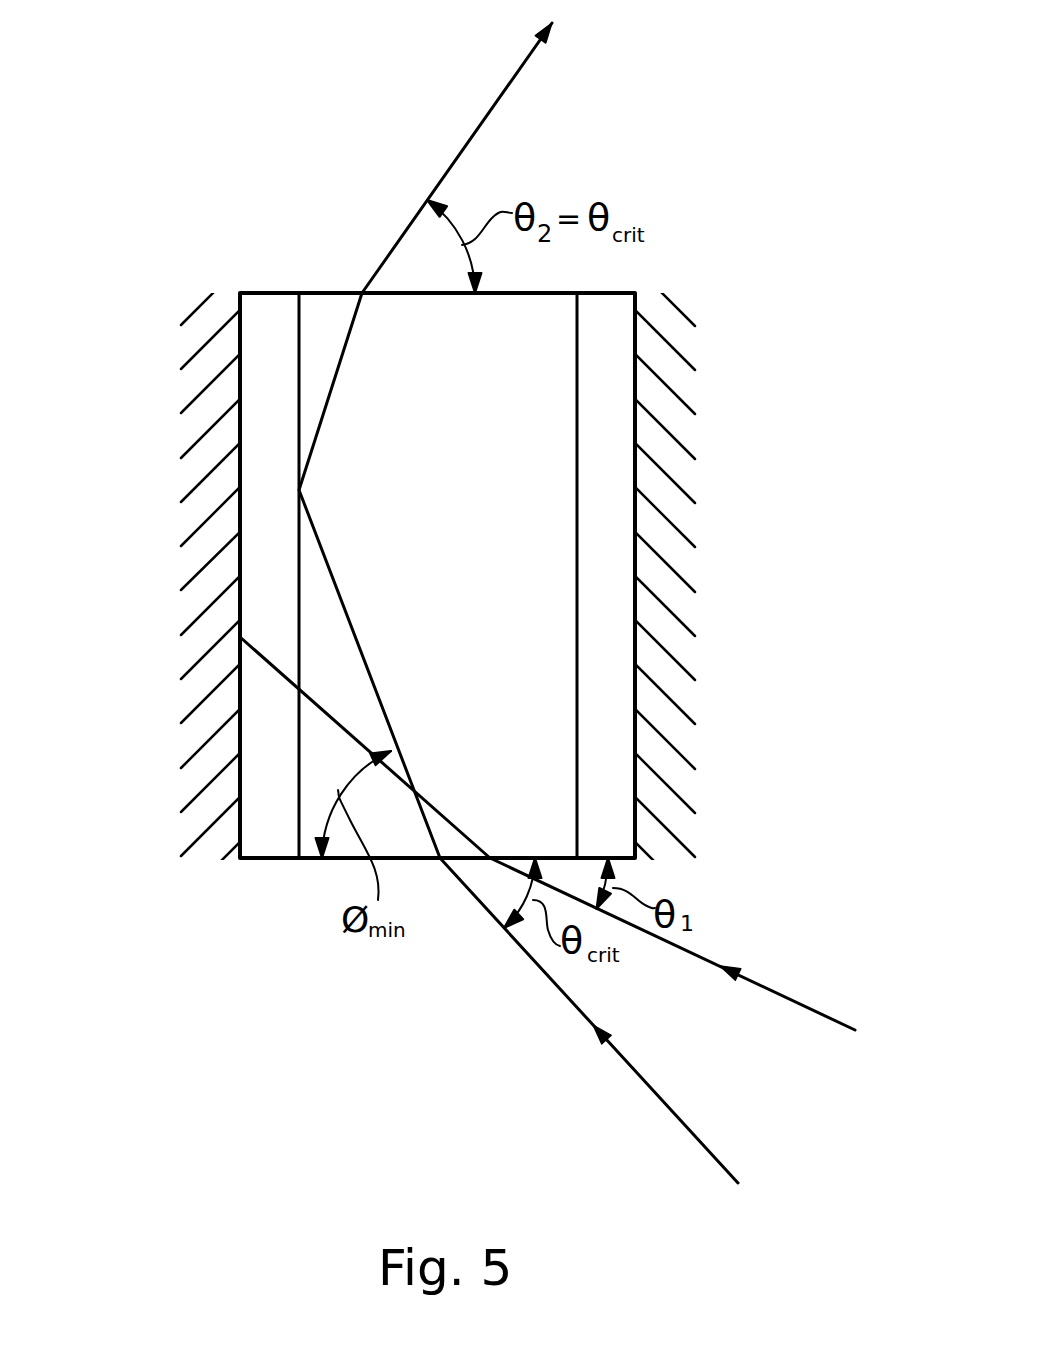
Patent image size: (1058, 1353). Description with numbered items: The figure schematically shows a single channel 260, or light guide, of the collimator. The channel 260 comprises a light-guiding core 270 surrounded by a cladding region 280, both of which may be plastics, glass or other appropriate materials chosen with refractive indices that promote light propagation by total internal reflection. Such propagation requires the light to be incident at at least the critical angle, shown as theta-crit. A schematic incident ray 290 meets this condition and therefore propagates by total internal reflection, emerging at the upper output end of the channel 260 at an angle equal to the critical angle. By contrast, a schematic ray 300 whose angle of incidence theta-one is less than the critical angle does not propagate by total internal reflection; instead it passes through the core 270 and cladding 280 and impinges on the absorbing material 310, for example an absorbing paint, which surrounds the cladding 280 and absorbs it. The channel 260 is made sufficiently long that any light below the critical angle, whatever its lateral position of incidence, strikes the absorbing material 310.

The channel 260 is at (428, 651).
The light-guiding core 270 is at (520, 626).
The cladding region 280 is at (603, 458).
The incident ray 290 is at (692, 1127).
The ray 300 is at (780, 995).
The absorbing material 310 is at (212, 712).